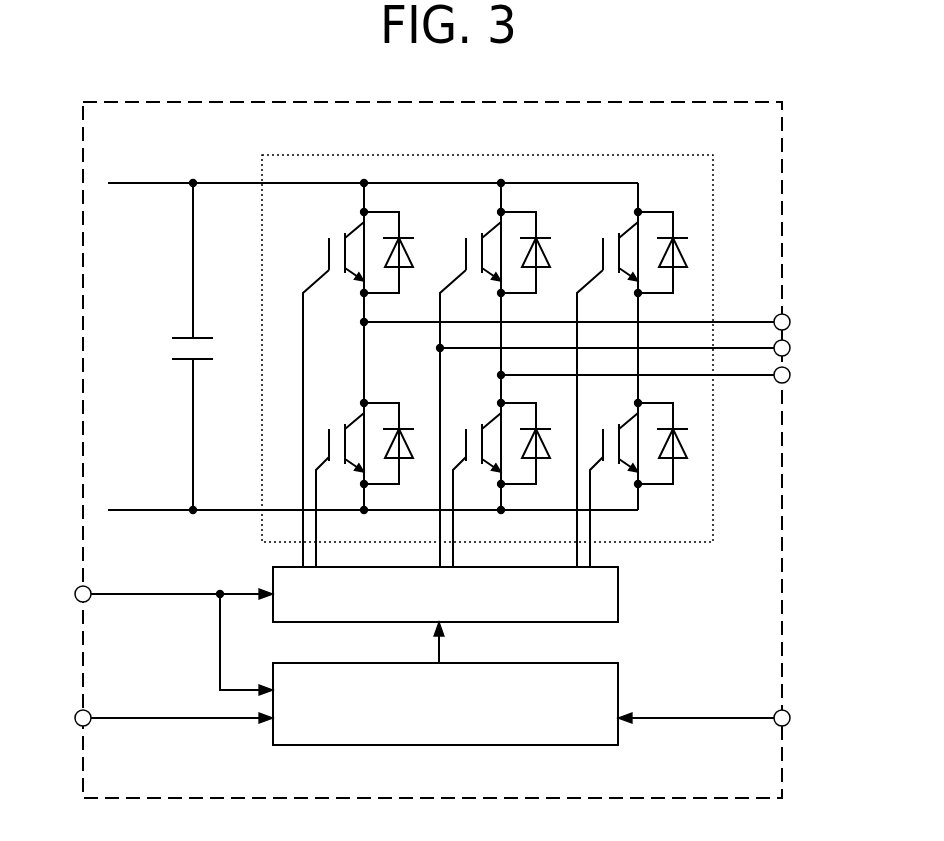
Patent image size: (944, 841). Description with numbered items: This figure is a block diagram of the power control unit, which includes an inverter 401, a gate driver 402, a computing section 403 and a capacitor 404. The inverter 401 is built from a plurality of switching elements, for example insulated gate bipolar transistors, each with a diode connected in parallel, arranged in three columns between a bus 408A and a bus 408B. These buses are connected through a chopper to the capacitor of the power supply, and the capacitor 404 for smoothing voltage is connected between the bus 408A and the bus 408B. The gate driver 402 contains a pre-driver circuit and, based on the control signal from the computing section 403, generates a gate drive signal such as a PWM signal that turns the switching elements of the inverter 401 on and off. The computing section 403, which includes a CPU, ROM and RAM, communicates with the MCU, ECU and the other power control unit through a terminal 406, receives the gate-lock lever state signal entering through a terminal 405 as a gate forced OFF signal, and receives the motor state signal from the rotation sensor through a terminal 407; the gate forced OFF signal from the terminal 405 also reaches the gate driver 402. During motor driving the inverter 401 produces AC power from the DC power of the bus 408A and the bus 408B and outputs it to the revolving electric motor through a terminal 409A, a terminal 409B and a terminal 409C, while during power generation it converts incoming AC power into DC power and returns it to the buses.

The inverter 401 is at (661, 155).
The gate driver 402 is at (618, 593).
The computing section 403 is at (563, 745).
The capacitor 404 is at (172, 327).
The terminal 405 is at (75, 589).
The terminal 406 is at (75, 712).
The terminal 407 is at (795, 710).
The bus 408A is at (150, 183).
The bus 408B is at (152, 510).
The terminal 409A is at (793, 317).
The terminal 409B is at (793, 344).
The terminal 409C is at (793, 371).